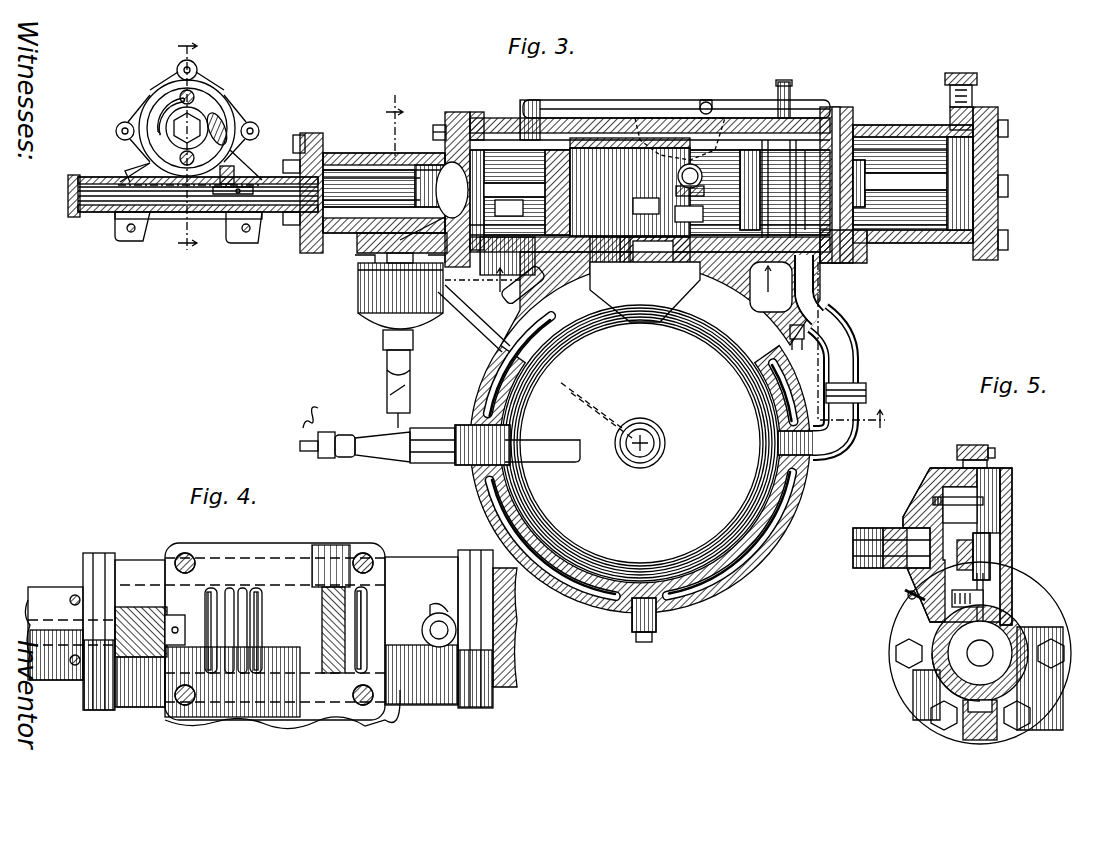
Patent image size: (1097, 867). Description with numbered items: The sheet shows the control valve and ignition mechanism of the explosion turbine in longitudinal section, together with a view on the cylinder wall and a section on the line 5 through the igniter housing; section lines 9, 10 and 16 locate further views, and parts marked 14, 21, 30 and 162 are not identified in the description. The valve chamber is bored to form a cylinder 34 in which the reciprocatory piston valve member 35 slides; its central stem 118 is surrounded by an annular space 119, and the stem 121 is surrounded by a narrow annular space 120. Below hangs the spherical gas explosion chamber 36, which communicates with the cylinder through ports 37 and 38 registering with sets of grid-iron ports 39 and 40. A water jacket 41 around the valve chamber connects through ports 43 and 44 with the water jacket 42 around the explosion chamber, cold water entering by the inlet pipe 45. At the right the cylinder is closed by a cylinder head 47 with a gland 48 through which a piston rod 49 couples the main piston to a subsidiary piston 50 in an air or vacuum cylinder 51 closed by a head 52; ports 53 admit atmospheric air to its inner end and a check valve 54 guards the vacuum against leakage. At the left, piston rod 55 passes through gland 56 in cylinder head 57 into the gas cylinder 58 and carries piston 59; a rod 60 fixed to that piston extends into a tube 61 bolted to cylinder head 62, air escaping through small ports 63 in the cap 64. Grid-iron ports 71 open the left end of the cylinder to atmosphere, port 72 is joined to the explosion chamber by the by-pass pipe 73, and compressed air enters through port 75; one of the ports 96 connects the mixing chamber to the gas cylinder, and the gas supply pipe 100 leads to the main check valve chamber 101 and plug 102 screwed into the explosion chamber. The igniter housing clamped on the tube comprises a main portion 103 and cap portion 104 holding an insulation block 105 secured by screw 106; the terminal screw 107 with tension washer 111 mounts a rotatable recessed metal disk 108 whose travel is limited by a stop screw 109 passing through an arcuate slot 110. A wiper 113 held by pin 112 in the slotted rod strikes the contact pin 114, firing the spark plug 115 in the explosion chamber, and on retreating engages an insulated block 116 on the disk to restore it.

In FIG. 3, the section line 5— 5 is at (187, 152).
In FIG. 3, the section line 9- 9 is at (394, 127).
In FIG. 3, the section line 10- 10 is at (863, 345).
In FIG. 3, the passage 14 is at (795, 279).
In FIG. 3, the section line 16 is at (482, 280).
In FIG. 3, the piston rod 21 is at (520, 200).
In FIG. 4, the cooling slots 30 is at (262, 600).
In FIG. 3, the cylinder 34 is at (817, 360).
In FIG. 3, the piston valve member 35 is at (642, 130).
In FIG. 3, the spherical gas explosion chamber 36 is at (690, 601).
In FIG. 3, the port 37 is at (560, 338).
In FIG. 3, the port 38 is at (695, 303).
In FIG. 3, the grid-iron ports 39 is at (630, 187).
In FIG. 3, the grid-iron ports 40 is at (655, 256).
In FIG. 4, the grid-iron ports 40 is at (323, 611).
In FIG. 3, the water jacket 41 is at (488, 283).
In FIG. 3, the water jacket 42 is at (762, 537).
In FIG. 3, the port 43 is at (545, 302).
In FIG. 4, the port 44 is at (363, 620).
In FIG. 3, the inlet pipe 45 is at (518, 300).
In FIG. 3, the cylinder head 47 is at (836, 130).
In FIG. 4, the cylinder head 47 is at (478, 708).
In FIG. 3, the gland 48 is at (866, 165).
In FIG. 3, the piston rod 49 is at (930, 190).
In FIG. 3, the subsidiary piston 50 is at (958, 232).
In FIG. 3, the air or vacuum cylinder 51 is at (898, 238).
In FIG. 3, the head 52 is at (1000, 152).
In FIG. 3, the ports 53 is at (855, 238).
In FIG. 4, the ports 53 is at (508, 625).
In FIG. 3, the check valve 54 is at (974, 103).
In FIG. 3, the piston rod 55 is at (515, 138).
In FIG. 3, the gland 56 is at (490, 125).
In FIG. 3, the cylinder head 57 is at (448, 150).
In FIG. 4, the cylinder head 57 is at (100, 700).
In FIG. 3, the gas cylinder 58 is at (390, 170).
In FIG. 3, the piston 59 is at (422, 166).
In FIG. 3, the rod 60 is at (345, 200).
In FIG. 5, the rod 60 is at (950, 653).
In FIG. 3, the tube 61 is at (178, 212).
In FIG. 3, the cylinder head 62 is at (293, 160).
In FIG. 3, the small ports 63 is at (70, 190).
In FIG. 3, the cap 64 is at (82, 198).
In FIG. 4, the grid-iron ports 71 is at (146, 612).
In FIG. 3, the port 72 is at (822, 262).
In FIG. 3, the by-pass pipe 73 is at (860, 365).
In FIG. 4, the by-pass pipe 73 is at (437, 614).
In FIG. 3, the port 75 is at (689, 163).
In FIG. 3, the port 96 is at (786, 118).
In FIG. 3, the gas supply pipe 100 is at (478, 323).
In FIG. 3, the main check valve chamber 101 is at (655, 435).
In FIG. 3, the plug 102 is at (662, 450).
In FIG. 3, the main portion of housing 103 is at (125, 237).
In FIG. 5, the main portion of housing 103 is at (945, 668).
In FIG. 5, the cap portion of housing 104 is at (1010, 525).
In FIG. 5, the block of insulation 105 is at (918, 604).
In FIG. 5, the screw 106 is at (908, 596).
In FIG. 5, the electrical conducting screw 107 is at (905, 515).
In FIG. 5, the recessed metal disk 108 is at (995, 465).
In FIG. 5, the stop screw 109 is at (1012, 500).
In FIG. 3, the arcuate slot 110 is at (187, 112).
In FIG. 5, the tension washer 111 is at (990, 562).
In FIG. 3, the pin 112 is at (229, 243).
In FIG. 3, the contact plate or wiper 113 is at (238, 165).
In FIG. 3, the contact pin 114 is at (185, 151).
In FIG. 3, the spark plug 115 is at (400, 462).
In FIG. 3, the insulated block 116 is at (224, 125).
In FIG. 3, the central stem 118 is at (689, 193).
In FIG. 3, the annular space 119 is at (700, 165).
In FIG. 3, the narrow annular space 120 is at (762, 150).
In FIG. 3, the stem 121 is at (800, 165).
In FIG. 5, the rod 162 is at (985, 615).